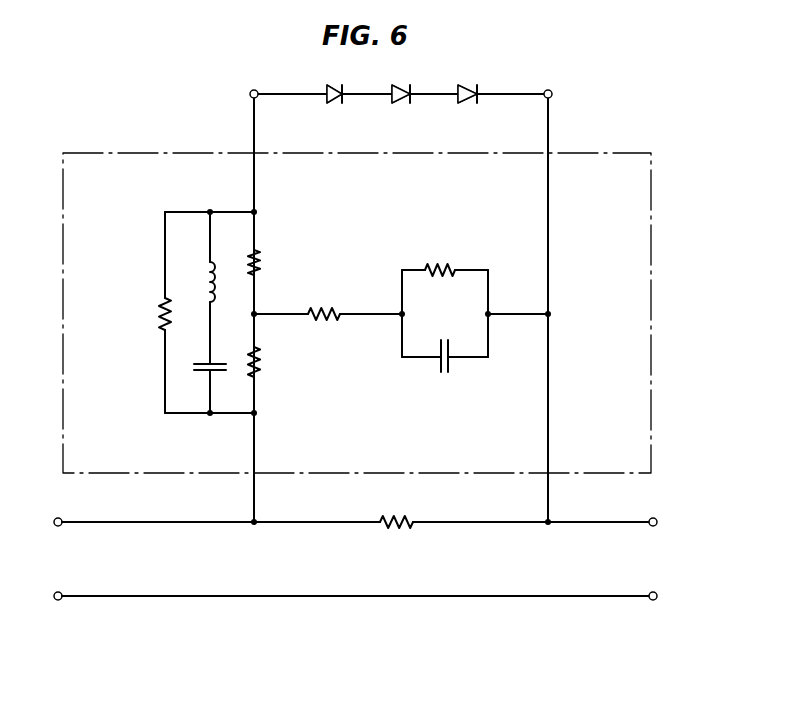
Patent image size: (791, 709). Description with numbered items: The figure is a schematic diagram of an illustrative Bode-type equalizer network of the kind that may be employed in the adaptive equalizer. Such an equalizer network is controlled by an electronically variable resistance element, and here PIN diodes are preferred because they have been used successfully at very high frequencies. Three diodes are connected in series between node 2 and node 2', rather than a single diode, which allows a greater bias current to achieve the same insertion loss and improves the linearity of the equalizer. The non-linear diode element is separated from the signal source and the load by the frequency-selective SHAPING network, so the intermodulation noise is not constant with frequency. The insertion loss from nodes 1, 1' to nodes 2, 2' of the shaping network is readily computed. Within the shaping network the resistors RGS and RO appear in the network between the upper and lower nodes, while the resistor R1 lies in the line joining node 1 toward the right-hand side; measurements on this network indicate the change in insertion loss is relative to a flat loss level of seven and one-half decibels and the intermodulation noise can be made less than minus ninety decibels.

The node 2 is at (252, 84).
The node 2' is at (547, 84).
The node 1 is at (58, 511).
The node 1' is at (59, 583).
The resistor RGS is at (146, 314).
The resistor RO is at (269, 363).
The resistor R1 is at (396, 537).
The shaping network SHAPING is at (357, 313).